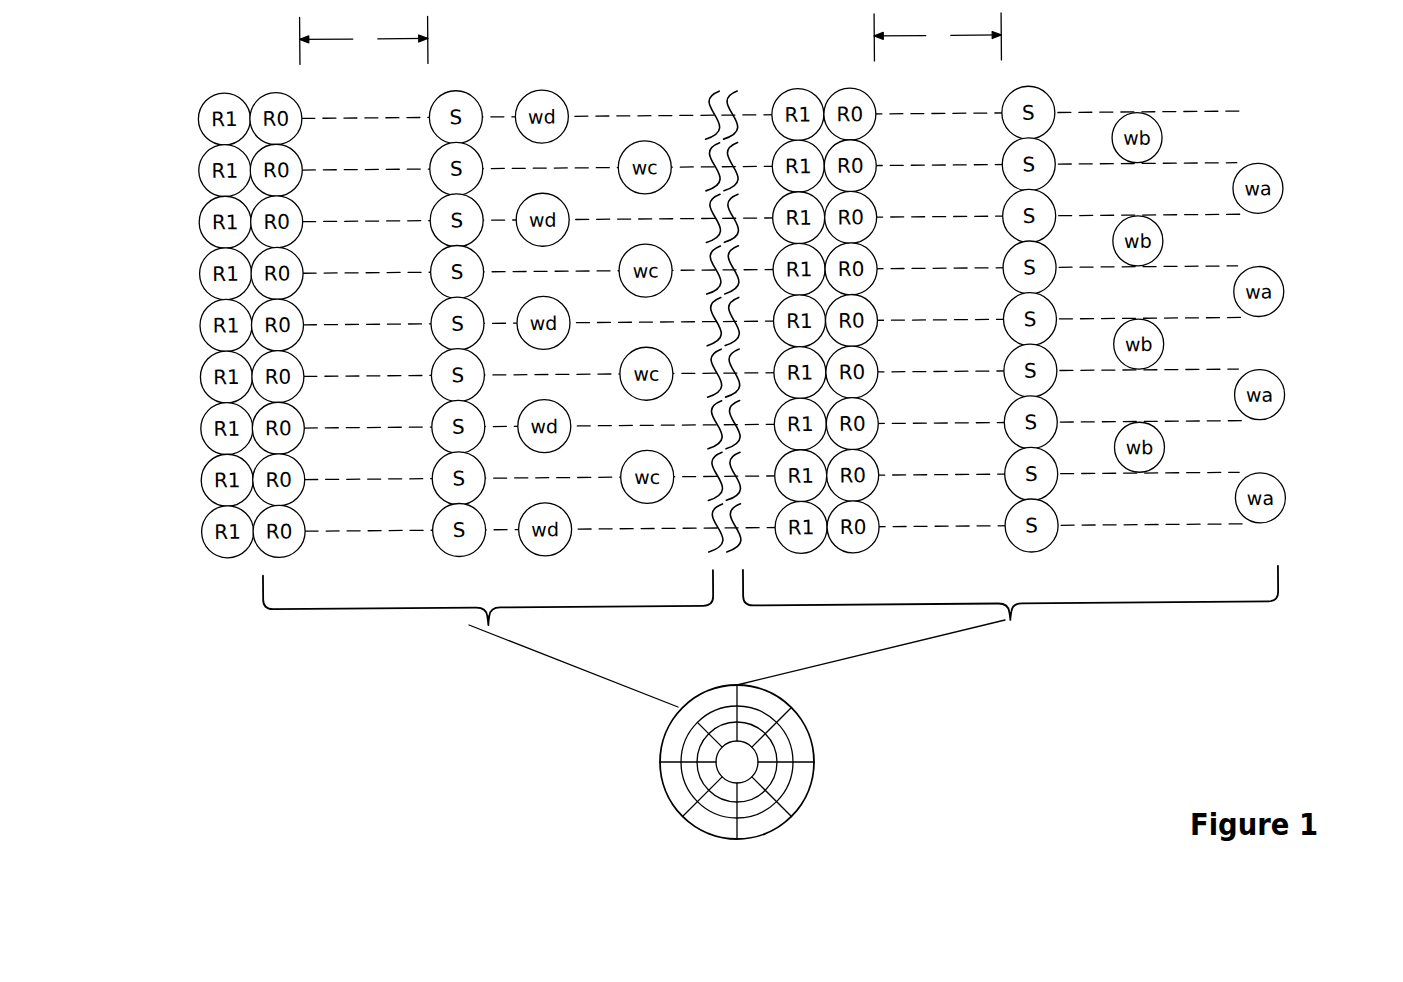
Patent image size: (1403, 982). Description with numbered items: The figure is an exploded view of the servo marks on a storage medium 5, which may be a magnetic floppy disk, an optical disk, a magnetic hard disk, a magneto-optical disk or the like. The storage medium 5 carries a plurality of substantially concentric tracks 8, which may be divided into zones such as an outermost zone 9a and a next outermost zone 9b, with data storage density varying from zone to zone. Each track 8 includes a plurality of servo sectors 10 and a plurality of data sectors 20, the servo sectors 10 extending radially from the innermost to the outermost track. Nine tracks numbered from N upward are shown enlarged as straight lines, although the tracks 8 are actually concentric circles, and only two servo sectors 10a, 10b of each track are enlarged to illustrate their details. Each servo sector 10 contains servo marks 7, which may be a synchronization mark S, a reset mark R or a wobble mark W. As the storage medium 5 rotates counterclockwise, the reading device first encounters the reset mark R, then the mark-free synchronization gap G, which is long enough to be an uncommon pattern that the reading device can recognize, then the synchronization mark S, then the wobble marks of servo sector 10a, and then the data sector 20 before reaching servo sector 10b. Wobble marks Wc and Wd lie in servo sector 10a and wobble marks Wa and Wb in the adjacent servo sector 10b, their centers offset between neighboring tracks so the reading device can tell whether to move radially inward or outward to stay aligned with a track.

The storage medium 5 is at (807, 728).
The servo mark 7 is at (277, 88).
The track 8 is at (827, 448).
The outermost zone 9a is at (677, 729).
The next outermost zone 9b is at (693, 745).
The servo sector 10 is at (803, 761).
The servo sector 10a is at (488, 638).
The servo sector 10b is at (1008, 625).
The data sector 20 is at (739, 72).
The synchronization gap G is at (651, 39).
The track number N is at (1252, 115).